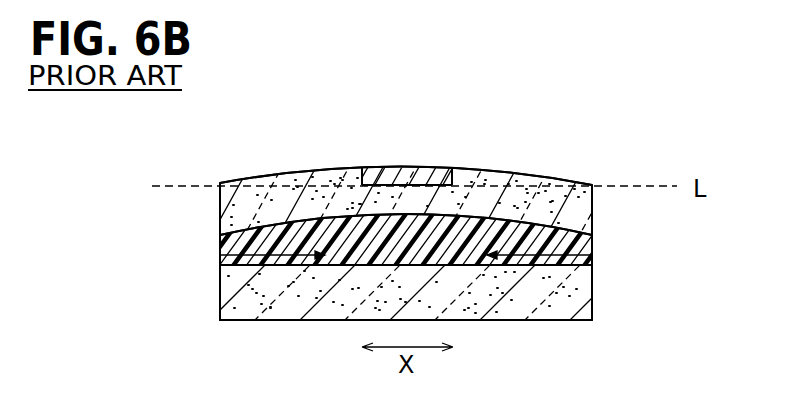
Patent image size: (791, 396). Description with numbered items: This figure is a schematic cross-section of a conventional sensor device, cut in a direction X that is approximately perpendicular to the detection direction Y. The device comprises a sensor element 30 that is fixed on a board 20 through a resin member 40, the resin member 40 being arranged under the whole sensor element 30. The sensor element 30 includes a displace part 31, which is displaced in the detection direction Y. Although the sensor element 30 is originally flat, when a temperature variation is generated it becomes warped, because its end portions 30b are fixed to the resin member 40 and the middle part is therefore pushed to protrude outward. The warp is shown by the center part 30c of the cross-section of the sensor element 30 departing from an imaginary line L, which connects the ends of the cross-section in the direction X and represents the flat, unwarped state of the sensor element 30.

The board 20 is at (580, 297).
The sensor element 30 is at (592, 207).
The end portion of the sensor element 30b is at (220, 183).
The center part of the cross-section of the sensor element 30c is at (408, 167).
The displace part 31 is at (387, 167).
The resin member 40 is at (592, 245).